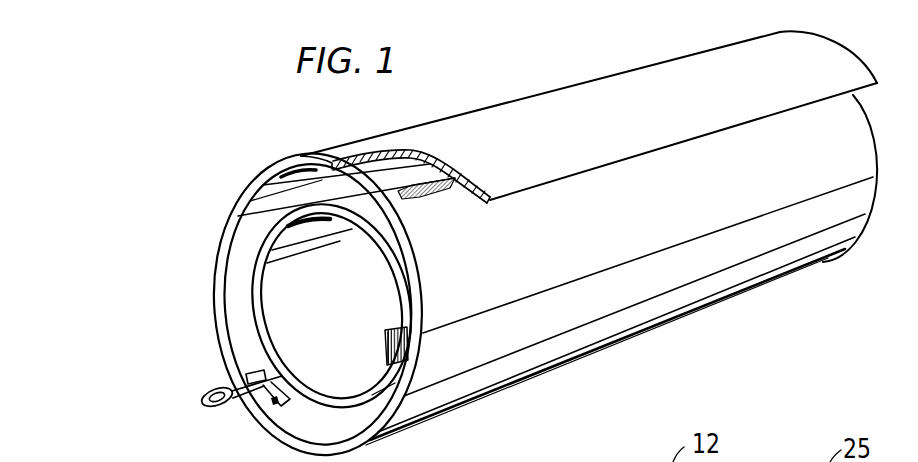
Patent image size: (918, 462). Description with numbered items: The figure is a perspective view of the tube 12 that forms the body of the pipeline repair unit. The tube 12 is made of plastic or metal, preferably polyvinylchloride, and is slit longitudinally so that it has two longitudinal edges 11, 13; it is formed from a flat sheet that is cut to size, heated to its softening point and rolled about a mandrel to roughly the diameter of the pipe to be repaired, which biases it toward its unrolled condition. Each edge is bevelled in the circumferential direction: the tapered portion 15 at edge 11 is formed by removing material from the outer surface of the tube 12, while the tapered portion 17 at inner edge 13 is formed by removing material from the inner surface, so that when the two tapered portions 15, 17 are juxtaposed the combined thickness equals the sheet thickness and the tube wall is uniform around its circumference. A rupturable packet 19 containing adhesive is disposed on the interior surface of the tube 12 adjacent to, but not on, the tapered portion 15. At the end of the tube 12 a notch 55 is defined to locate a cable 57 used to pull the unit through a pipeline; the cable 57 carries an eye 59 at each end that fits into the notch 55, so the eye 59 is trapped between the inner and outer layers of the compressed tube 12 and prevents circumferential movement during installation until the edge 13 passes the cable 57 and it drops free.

The longitudinal edge 11 is at (754, 122).
The tube 12 is at (695, 64).
The longitudinal edge 13 is at (392, 329).
The tapered portion 15 is at (489, 203).
The tapered portion 17 is at (385, 349).
The rupturable packet 19 is at (427, 202).
The notch 55 is at (261, 395).
The cable 57 is at (278, 404).
The eye 59 is at (202, 401).